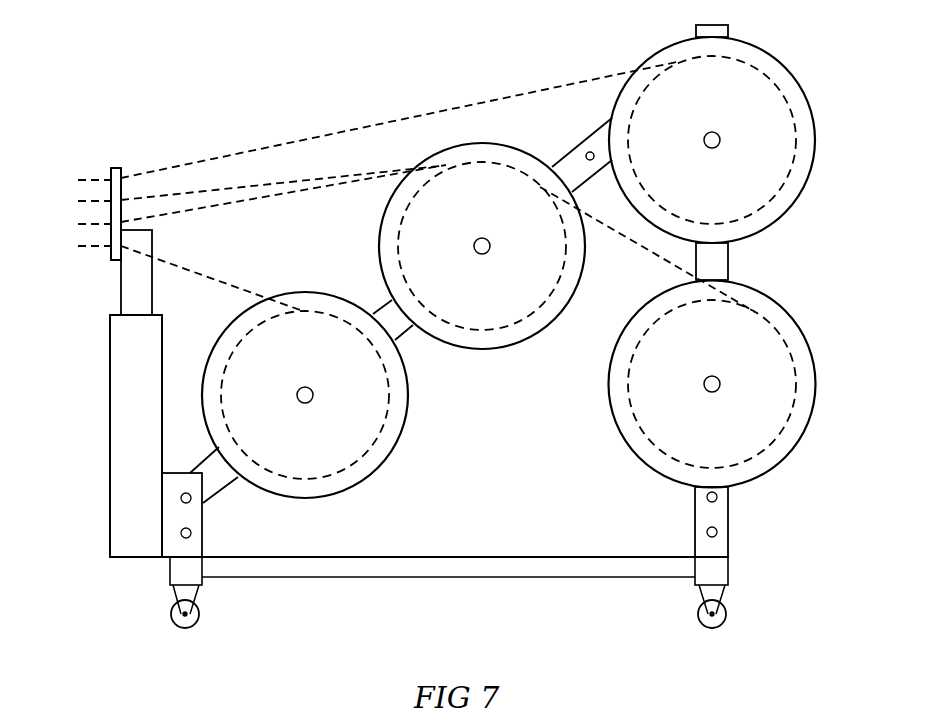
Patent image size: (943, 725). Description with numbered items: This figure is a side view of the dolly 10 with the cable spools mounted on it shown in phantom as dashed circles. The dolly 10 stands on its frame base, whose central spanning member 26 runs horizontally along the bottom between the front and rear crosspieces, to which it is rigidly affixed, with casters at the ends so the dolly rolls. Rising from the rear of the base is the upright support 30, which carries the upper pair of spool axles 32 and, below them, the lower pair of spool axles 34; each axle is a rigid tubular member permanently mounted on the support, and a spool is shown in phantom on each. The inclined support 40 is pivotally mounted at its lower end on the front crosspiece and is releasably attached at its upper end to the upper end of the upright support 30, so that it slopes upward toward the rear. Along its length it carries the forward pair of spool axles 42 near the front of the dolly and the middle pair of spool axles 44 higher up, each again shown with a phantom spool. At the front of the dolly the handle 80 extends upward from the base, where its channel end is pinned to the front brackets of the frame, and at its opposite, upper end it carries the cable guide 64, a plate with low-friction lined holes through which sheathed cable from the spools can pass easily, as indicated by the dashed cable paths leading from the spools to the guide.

The dolly 10 is at (290, 600).
The central spanning member 26 is at (578, 556).
The upright support 30 is at (730, 262).
The upper pair of spool axles 32 is at (718, 135).
The lower pair of spool axles 34 is at (718, 380).
The inclined support 40 is at (380, 303).
The forward pair of spool axles 42 is at (310, 401).
The middle pair of spool axles 44 is at (488, 253).
The cable guide 64 is at (114, 167).
The handle 80 is at (108, 372).